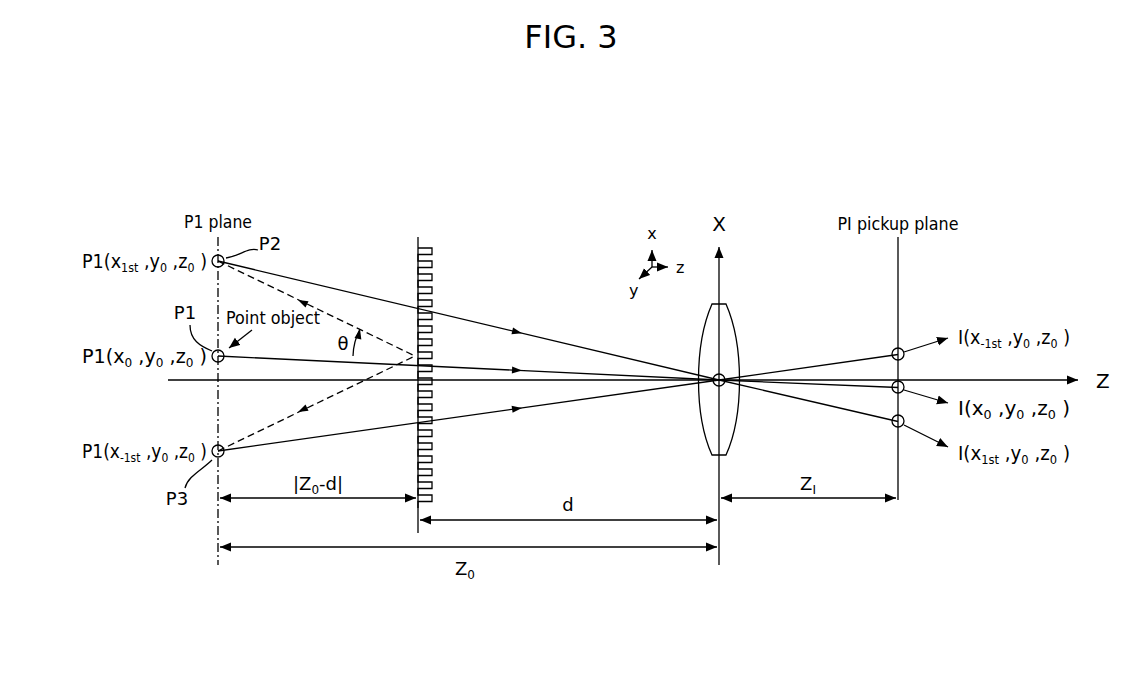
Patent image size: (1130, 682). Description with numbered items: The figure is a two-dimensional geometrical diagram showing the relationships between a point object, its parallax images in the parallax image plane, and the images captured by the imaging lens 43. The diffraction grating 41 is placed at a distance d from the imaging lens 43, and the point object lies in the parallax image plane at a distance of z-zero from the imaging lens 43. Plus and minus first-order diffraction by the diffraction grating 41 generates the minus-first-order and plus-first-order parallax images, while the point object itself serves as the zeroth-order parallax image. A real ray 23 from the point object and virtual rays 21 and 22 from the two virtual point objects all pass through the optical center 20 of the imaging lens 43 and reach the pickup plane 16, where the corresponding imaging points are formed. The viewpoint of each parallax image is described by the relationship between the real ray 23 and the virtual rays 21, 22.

The pickup plane 16 is at (900, 268).
The optical center 20 is at (726, 377).
The virtual ray 21 is at (466, 318).
The virtual ray 22 is at (487, 414).
The real ray 23 is at (559, 371).
The diffraction grating 41 is at (428, 247).
The imaging lens 43 is at (736, 313).